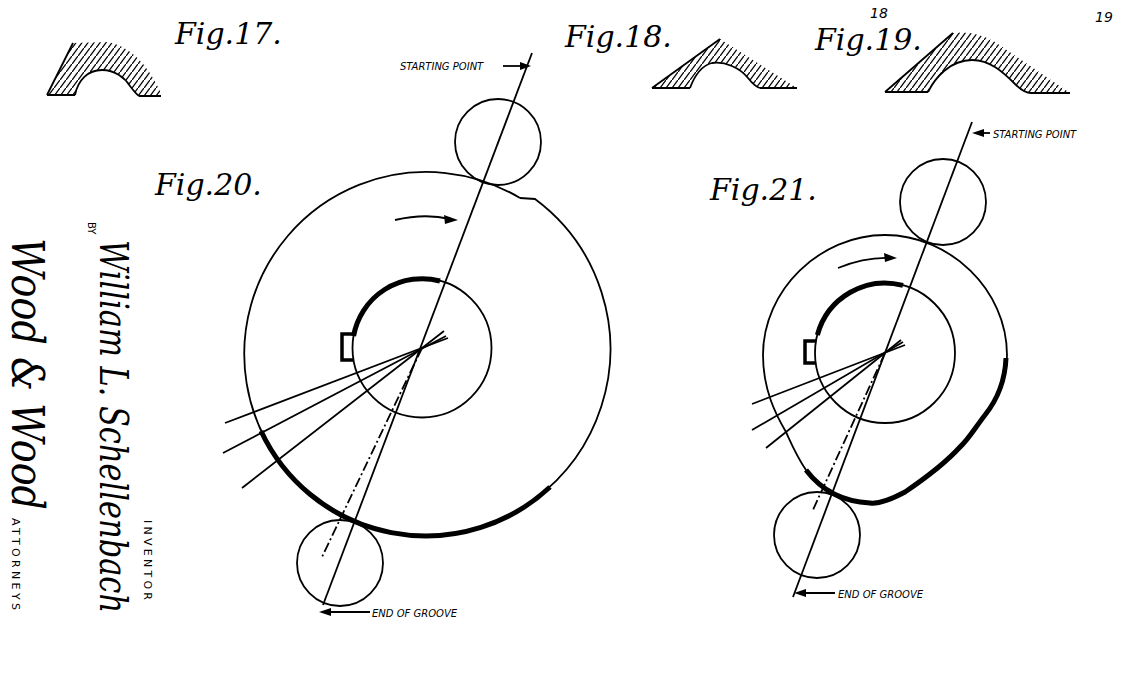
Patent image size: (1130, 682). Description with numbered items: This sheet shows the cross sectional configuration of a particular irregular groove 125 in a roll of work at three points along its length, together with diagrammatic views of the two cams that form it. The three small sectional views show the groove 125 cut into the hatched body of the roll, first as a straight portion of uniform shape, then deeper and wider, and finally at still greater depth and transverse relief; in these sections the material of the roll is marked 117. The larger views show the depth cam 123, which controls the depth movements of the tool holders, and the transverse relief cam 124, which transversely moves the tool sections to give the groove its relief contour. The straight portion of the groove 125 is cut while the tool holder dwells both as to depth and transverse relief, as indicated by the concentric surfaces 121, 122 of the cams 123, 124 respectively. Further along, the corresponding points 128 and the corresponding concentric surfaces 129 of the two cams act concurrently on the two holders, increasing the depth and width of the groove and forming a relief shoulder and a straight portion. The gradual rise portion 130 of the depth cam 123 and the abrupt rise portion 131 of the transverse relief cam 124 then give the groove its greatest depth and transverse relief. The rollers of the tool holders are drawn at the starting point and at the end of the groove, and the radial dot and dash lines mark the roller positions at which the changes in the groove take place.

In FIG. 17, the cam body section 117 is at (100, 55).
In FIG. 18, the cam body section 117 is at (663, 88).
In FIG. 19, the cam body section 117 is at (915, 82).
In FIG. 17, the groove 125 is at (120, 92).
In FIG. 18, the groove 125 is at (745, 77).
In FIG. 19, the groove 125 is at (1005, 73).
In FIG. 20, the concentric surface of the depth cam 121 is at (266, 258).
In FIG. 20, the depth cam 123 is at (558, 303).
In FIG. 21, the concentric surface of the transverse relief cam 122 is at (786, 286).
In FIG. 21, the transverse relief cam 124 is at (965, 307).
In FIG. 20, the corresponding points 128 is at (262, 432).
In FIG. 21, the corresponding points 128 is at (778, 417).
In FIG. 20, the corresponding concentric surfaces 129 is at (333, 406).
In FIG. 21, the corresponding concentric surfaces 129 is at (811, 400).
In FIG. 20, the gradual rise portion 130 is at (296, 481).
In FIG. 21, the abrupt rise portion 131 is at (797, 462).